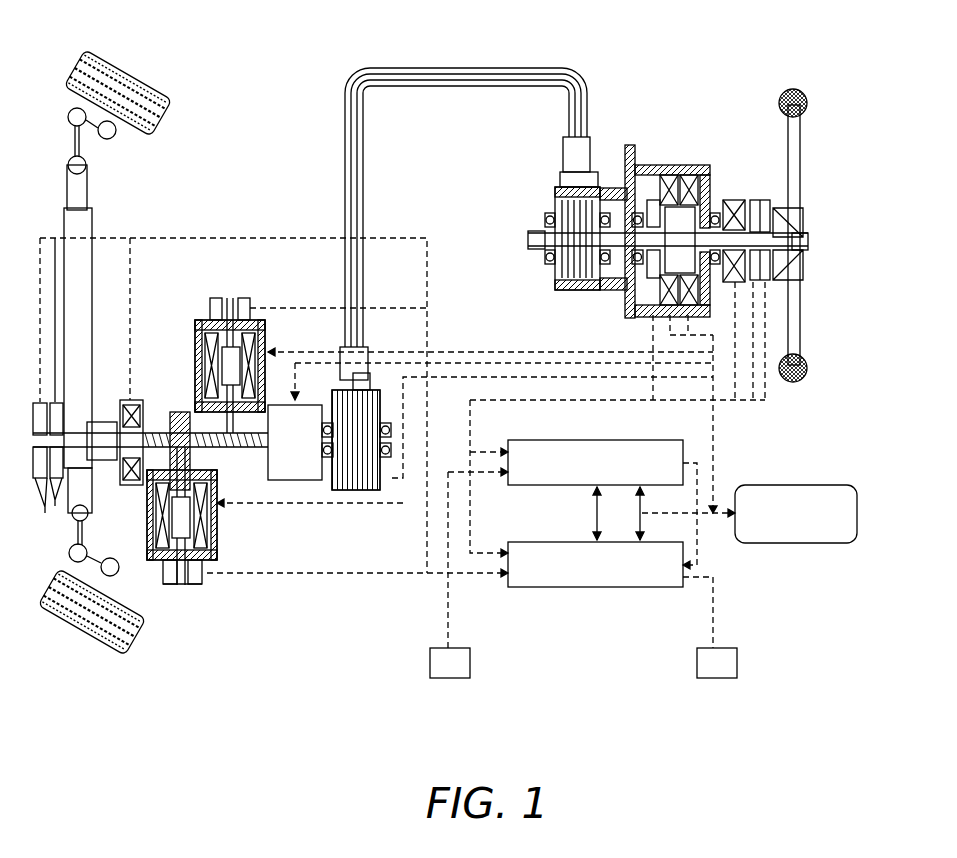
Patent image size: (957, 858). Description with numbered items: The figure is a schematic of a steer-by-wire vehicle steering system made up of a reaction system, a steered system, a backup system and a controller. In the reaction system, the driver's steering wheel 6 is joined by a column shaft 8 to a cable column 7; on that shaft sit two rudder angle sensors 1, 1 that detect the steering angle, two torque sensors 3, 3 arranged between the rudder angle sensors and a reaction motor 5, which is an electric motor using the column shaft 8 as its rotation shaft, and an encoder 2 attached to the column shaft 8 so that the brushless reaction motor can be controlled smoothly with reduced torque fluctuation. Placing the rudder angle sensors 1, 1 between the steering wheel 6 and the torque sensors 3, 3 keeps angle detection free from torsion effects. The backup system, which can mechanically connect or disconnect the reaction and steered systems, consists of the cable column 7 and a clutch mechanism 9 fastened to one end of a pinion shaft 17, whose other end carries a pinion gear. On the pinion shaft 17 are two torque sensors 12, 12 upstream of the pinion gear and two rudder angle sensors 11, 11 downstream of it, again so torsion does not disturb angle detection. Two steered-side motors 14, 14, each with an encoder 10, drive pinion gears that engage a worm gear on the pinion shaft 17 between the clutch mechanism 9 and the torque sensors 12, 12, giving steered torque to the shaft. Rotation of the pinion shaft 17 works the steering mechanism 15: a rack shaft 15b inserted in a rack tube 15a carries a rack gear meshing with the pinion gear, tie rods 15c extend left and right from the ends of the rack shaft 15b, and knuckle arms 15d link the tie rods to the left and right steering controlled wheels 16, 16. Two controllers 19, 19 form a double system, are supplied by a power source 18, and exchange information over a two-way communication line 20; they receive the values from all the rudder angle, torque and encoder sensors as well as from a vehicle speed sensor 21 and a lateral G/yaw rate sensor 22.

The rudder angle sensor 1 is at (767, 200).
The encoder 2 is at (627, 307).
The torque sensor 3 is at (727, 200).
The reaction motor 5 is at (653, 165).
The steering wheel 6 is at (800, 145).
The cable column 7 is at (472, 93).
The column shaft 8 is at (800, 293).
The clutch mechanism 9 is at (308, 480).
The encoder 10 is at (247, 293).
The rudder angle sensor 11 is at (48, 474).
The torque sensor 12 is at (133, 397).
The steered-side motor 14 is at (268, 335).
The steering mechanism 15 is at (100, 287).
The rack tube 15a is at (97, 227).
The rack shaft 15b is at (87, 188).
The tie rod 15c is at (80, 540).
The knuckle arm 15d is at (90, 560).
The steering controlled wheel 16 is at (120, 67).
The pinion shaft 17 is at (158, 420).
The power source 18 is at (787, 483).
The controller 19 is at (548, 438).
The two-way communication line 20 is at (596, 511).
The vehicle speed sensor 21 is at (428, 667).
The lateral G/yaw rate sensor 22 is at (690, 667).